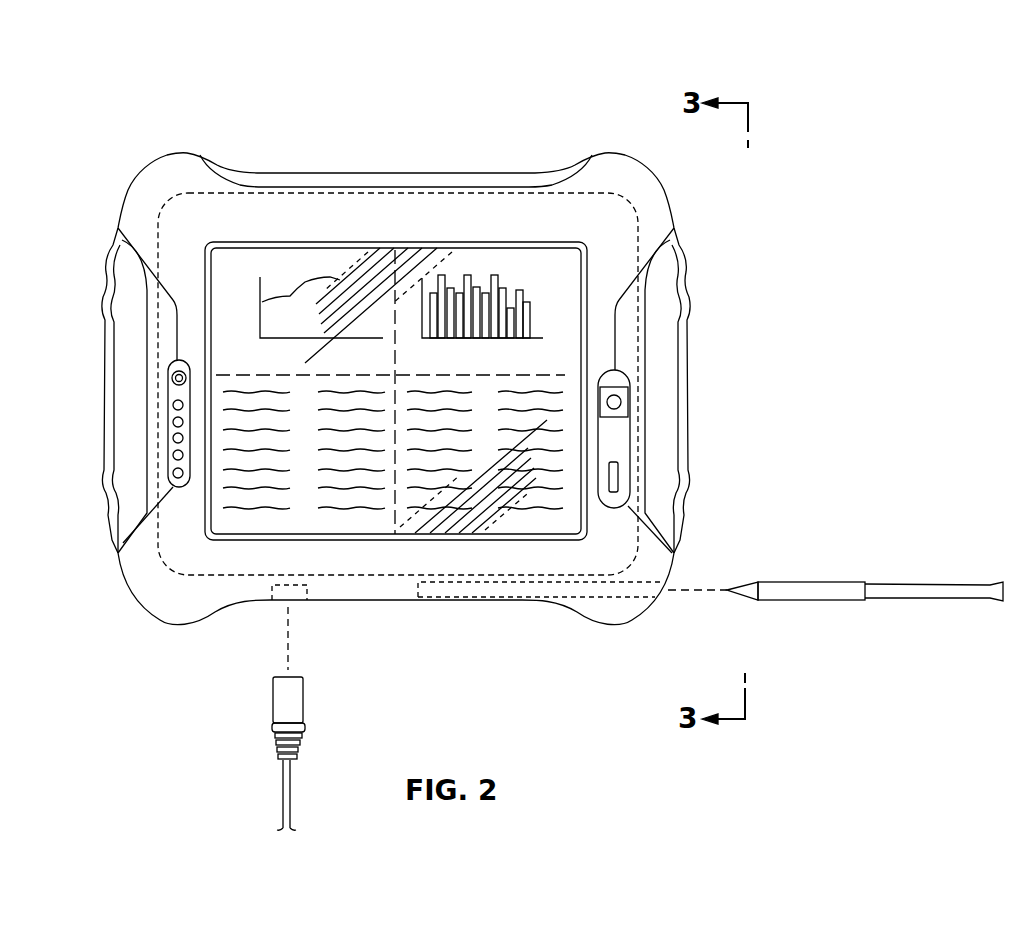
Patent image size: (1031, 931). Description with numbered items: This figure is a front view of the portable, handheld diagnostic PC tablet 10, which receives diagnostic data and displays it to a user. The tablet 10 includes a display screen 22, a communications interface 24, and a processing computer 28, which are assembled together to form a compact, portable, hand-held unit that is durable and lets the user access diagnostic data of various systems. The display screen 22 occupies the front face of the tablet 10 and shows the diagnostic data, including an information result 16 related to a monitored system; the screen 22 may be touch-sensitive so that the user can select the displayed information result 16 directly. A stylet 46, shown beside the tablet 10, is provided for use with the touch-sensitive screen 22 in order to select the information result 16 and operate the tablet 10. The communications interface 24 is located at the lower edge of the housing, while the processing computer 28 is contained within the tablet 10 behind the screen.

The tablet 10 is at (186, 124).
The processing computer 28 is at (628, 213).
The display screen 22 is at (540, 375).
The information result 16 is at (562, 438).
The communications interface 24 is at (298, 601).
The stylet 46 is at (793, 582).